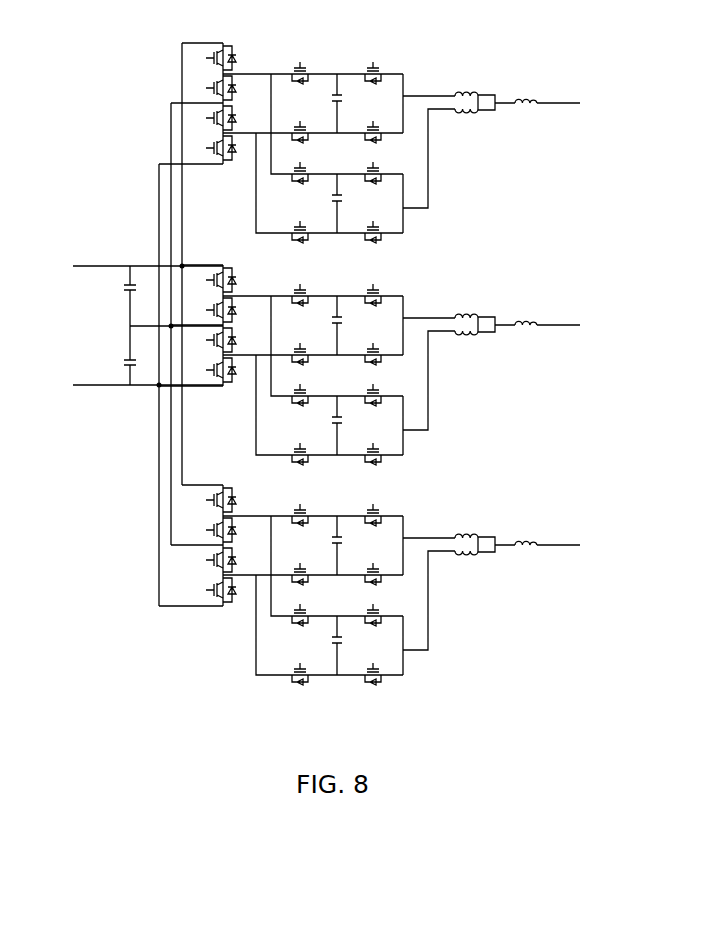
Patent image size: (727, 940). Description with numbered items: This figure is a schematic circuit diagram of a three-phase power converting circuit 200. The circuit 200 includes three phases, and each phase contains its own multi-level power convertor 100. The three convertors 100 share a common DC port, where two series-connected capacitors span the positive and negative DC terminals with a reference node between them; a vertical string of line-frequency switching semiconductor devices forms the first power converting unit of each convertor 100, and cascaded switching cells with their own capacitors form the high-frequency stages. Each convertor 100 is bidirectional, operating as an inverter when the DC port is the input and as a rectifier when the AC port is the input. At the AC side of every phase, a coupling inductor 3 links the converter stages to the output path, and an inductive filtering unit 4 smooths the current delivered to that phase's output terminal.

The three-phase power converting circuit 200 is at (108, 54).
The multi-level power convertor 100 is at (202, 38).
The coupling inductor 3 is at (466, 95).
The inductive filtering unit 4 is at (526, 102).